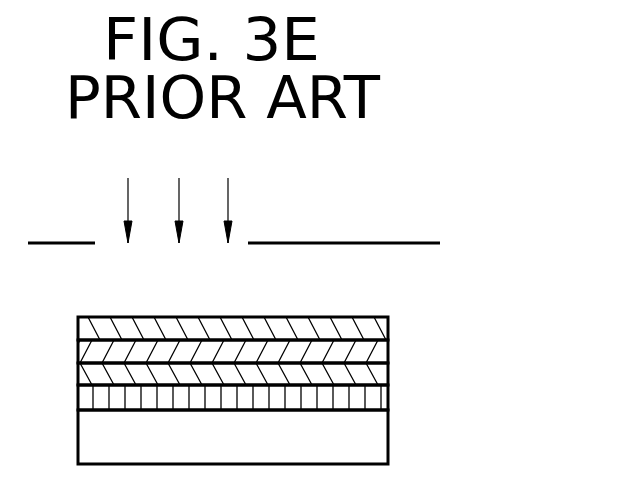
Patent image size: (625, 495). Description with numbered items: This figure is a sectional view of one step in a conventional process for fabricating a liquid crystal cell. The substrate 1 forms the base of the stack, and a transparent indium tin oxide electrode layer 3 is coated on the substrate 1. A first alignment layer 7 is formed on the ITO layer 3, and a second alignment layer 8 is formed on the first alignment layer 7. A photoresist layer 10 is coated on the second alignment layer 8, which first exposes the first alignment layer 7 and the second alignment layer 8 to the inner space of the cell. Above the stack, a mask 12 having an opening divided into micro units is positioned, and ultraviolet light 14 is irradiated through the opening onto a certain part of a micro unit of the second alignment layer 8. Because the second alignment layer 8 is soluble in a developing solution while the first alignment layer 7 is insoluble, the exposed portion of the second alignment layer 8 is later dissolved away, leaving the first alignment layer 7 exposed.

The ion implantation 14 is at (228, 190).
The mask 12 is at (392, 243).
The photoresist layer 10 is at (378, 331).
The second alignment layer 8 is at (375, 355).
The first alignment layer 7 is at (378, 380).
The transparent indium tin oxide electrode layer 3 is at (382, 402).
The substrate 1 is at (382, 448).